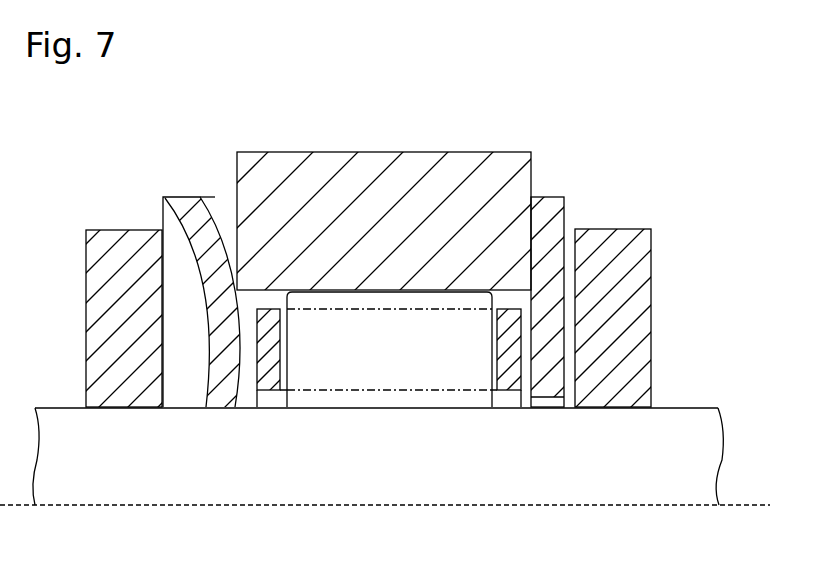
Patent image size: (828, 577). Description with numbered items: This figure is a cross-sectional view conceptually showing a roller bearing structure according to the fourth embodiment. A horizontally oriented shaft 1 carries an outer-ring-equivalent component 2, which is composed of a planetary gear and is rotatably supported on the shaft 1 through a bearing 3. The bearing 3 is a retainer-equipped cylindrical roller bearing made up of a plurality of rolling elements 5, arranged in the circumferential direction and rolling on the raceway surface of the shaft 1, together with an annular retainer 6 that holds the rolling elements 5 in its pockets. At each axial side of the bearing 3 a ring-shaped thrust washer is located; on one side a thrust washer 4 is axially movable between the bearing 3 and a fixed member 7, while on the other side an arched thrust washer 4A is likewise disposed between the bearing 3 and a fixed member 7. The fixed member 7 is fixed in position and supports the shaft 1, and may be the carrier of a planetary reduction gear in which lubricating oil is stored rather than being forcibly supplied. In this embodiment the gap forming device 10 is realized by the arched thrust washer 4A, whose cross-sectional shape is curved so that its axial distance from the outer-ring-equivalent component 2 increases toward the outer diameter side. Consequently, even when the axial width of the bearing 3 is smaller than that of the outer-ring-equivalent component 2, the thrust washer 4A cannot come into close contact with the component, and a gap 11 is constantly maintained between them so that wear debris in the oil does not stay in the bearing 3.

The shaft 1 is at (55, 406).
The outer-ring-equivalent component 2 is at (332, 160).
The bearing 3 is at (484, 81).
The thrust washer 4 is at (564, 212).
The arched thrust washer 4A is at (163, 203).
The rolling element 5 is at (387, 303).
The retainer 6 is at (503, 303).
The fixed member 7 is at (86, 263).
The gap forming device 10 is at (194, 114).
The gap 11 is at (215, 191).